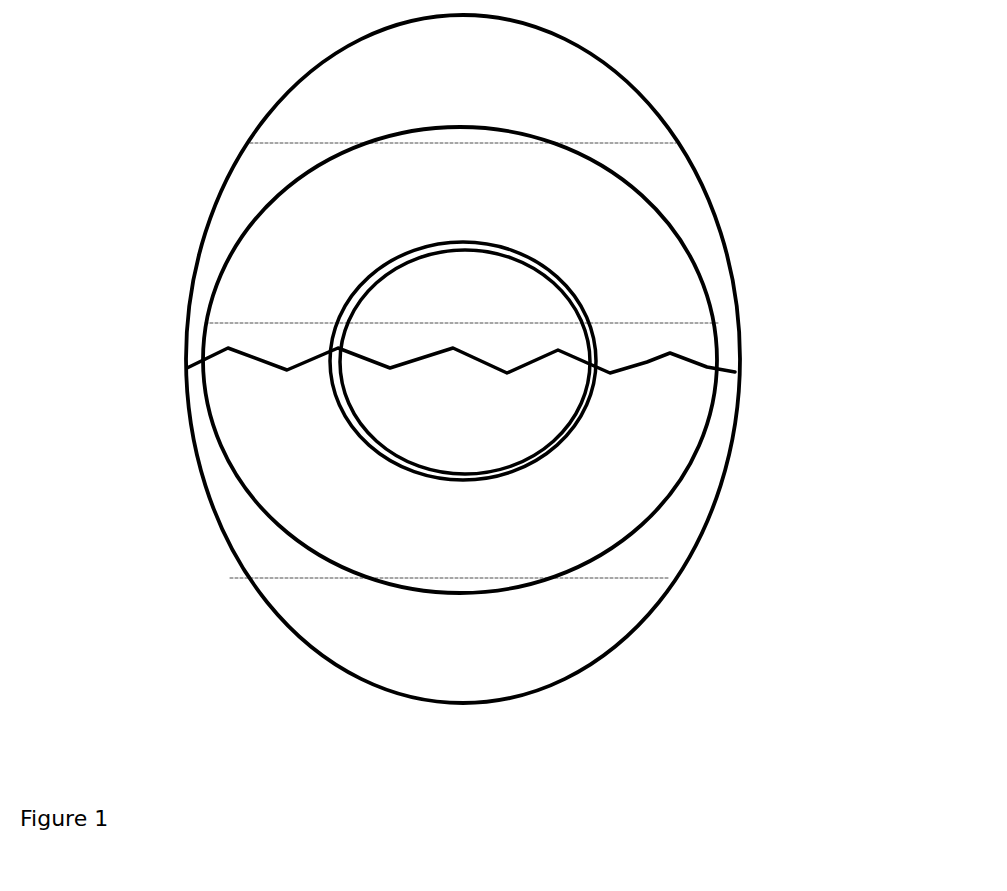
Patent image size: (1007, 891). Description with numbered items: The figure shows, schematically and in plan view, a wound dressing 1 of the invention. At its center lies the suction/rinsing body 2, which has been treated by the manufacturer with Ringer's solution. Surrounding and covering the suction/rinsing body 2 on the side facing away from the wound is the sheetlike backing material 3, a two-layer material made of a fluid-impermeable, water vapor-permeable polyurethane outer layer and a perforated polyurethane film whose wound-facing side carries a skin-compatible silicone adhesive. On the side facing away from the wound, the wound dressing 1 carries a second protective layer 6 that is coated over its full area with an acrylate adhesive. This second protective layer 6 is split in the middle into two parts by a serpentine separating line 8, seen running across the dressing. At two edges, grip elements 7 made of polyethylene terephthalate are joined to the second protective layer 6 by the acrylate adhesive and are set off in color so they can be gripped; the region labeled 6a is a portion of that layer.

The wound dressing 1 is at (752, 151).
The suction/rinsing body 2 is at (531, 301).
The sheetlike backing material 3 is at (675, 440).
The second protective layer 6 is at (677, 542).
The layer section 6a is at (290, 457).
The grip elements 7 is at (600, 80).
The serpentine separating line 8 is at (705, 366).